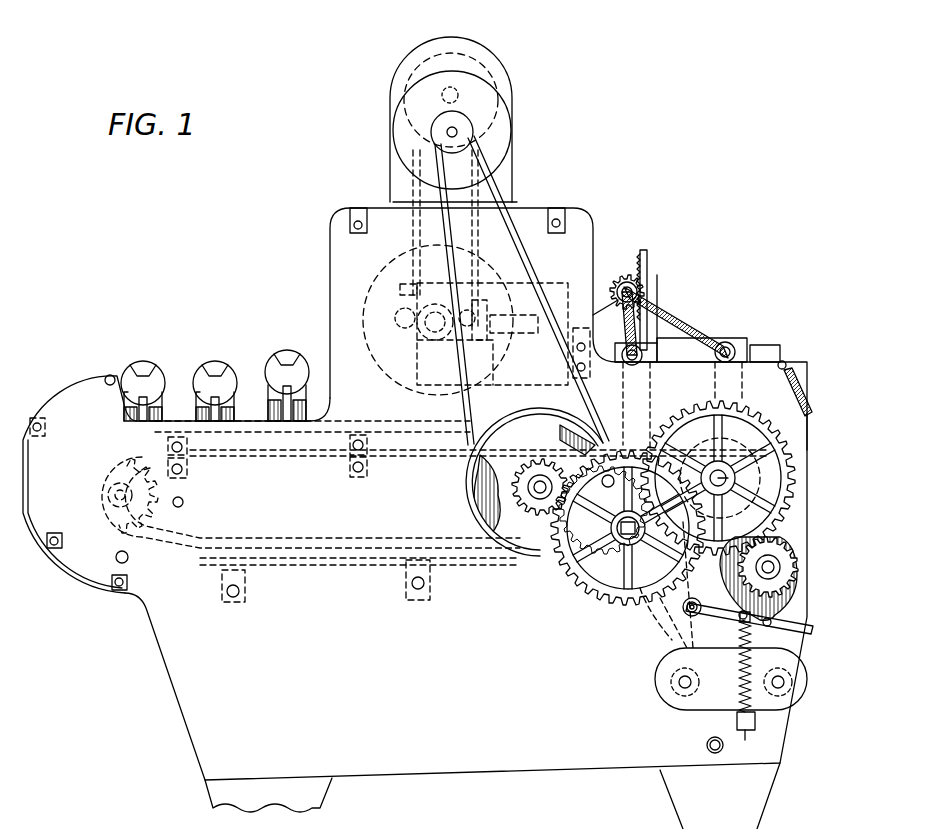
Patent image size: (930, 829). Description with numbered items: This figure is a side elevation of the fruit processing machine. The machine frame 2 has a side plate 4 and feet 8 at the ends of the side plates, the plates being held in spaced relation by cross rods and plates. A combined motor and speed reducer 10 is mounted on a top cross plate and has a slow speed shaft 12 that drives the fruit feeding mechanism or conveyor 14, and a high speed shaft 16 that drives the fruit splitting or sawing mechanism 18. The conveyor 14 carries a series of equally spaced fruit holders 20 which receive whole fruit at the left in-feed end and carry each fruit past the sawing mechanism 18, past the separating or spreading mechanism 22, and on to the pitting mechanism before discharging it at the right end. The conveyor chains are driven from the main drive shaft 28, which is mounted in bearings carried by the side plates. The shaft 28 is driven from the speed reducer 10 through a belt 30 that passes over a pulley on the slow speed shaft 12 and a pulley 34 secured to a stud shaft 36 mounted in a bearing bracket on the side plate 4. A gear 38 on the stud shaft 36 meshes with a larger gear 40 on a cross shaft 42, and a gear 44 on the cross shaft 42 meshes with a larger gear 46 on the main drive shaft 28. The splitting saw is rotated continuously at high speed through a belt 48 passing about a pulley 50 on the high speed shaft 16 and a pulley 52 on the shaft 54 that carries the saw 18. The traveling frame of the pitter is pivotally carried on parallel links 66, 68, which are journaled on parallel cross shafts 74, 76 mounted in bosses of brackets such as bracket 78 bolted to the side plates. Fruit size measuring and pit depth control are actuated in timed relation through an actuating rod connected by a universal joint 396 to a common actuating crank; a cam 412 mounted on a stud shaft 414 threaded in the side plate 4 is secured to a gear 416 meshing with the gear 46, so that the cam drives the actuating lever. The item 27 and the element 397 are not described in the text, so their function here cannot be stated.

The machine frame 2 is at (592, 210).
The side plate 4 is at (532, 762).
The feet 8 is at (322, 797).
The combined motor and speed reducer 10 is at (512, 98).
The slow speed shaft 12 is at (456, 132).
The fruit feeding mechanism or conveyor 14 is at (197, 540).
The high speed shaft 16 is at (462, 92).
The fruit splitting or sawing mechanism 18 is at (387, 373).
The fruit holders 20 is at (160, 360).
The separating or spreading mechanism 22 is at (507, 357).
The rack and lever assembly 27 is at (690, 312).
The main drive shaft 28 is at (718, 478).
The belt 30 is at (520, 206).
The pulley 34 is at (477, 513).
The stud shaft 36 is at (520, 496).
The gear 38 is at (457, 163).
The larger gear 40 is at (582, 590).
The cross shaft 42 is at (628, 532).
The gear 44 is at (655, 598).
The larger gear 46 is at (747, 416).
The belt 48 is at (410, 178).
The pulley 50 is at (478, 56).
The pulley 52 is at (432, 282).
The shaft 54 is at (440, 322).
The parallel link 66 is at (686, 655).
The parallel link 68 is at (725, 384).
The cross shaft 74 is at (684, 684).
The cross shaft 76 is at (778, 690).
The bracket 78 is at (690, 712).
The universal joint 396 is at (784, 352).
The rod guide 397 is at (802, 362).
The cam 412 is at (742, 618).
The stud shaft 414 is at (765, 568).
The gear 416 is at (782, 547).